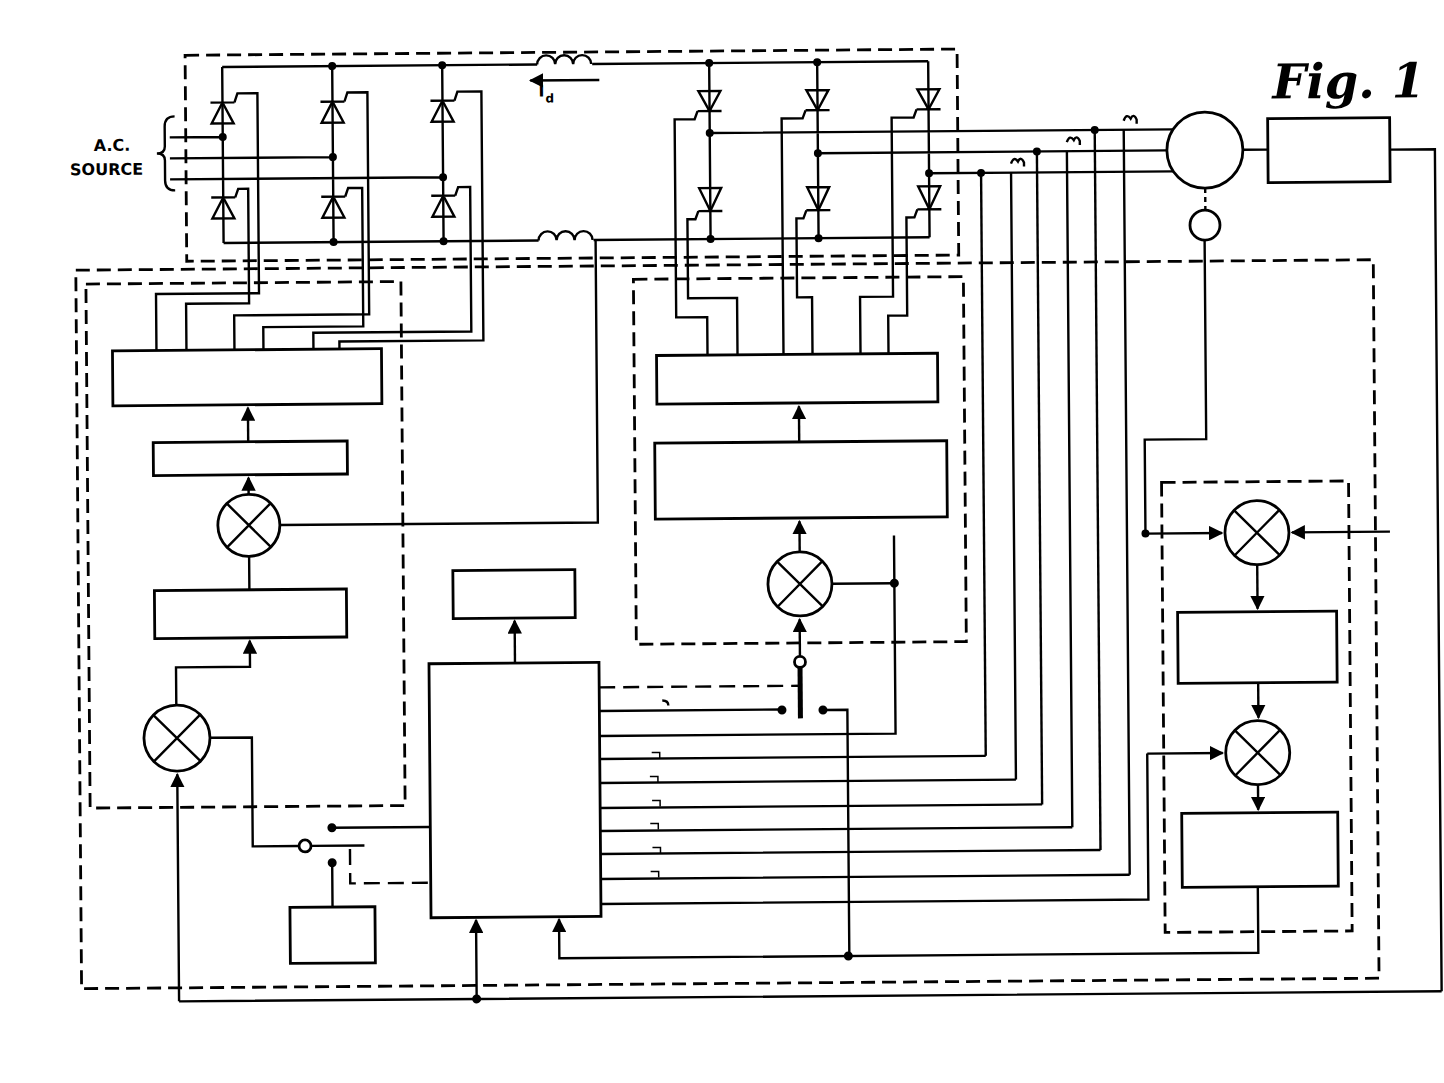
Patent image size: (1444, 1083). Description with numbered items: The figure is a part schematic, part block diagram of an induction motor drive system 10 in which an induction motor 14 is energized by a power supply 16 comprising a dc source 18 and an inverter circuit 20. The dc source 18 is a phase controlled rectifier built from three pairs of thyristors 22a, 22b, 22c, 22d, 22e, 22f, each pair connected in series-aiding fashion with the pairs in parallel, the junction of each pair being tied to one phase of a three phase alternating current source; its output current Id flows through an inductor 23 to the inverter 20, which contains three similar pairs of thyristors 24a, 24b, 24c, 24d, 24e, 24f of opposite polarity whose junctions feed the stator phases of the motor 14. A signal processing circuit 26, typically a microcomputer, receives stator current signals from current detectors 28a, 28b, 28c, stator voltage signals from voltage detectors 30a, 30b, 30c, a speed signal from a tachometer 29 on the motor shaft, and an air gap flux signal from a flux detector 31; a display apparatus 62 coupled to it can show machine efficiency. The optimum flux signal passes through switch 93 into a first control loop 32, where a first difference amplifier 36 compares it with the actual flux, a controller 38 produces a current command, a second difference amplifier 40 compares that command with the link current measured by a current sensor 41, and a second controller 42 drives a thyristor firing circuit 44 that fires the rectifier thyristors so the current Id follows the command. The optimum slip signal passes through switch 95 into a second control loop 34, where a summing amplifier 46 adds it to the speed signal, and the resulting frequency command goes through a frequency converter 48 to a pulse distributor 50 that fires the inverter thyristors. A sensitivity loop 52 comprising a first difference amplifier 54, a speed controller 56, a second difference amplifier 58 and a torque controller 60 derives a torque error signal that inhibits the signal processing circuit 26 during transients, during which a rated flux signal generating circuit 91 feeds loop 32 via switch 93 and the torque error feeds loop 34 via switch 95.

The induction motor drive system 10 is at (114, 79).
The induction motor 14 is at (1235, 184).
The power supply 16 is at (962, 78).
The dc source 18 is at (497, 162).
The inverter circuit 20 is at (662, 162).
The thyristor 22a is at (235, 104).
The thyristor 22b is at (235, 211).
The thyristor 22c is at (324, 100).
The thyristor 22d is at (323, 200).
The thyristor 22e is at (432, 100).
The thyristor 22f is at (428, 200).
The inductor 23 is at (590, 70).
The thyristor 24a is at (695, 98).
The thyristor 24b is at (724, 208).
The thyristor 24c is at (798, 98).
The thyristor 24d is at (832, 208).
The thyristor 24e is at (908, 98).
The thyristor 24f is at (910, 196).
The signal processing circuit 26 is at (470, 662).
The current detector 28a is at (1012, 160).
The current detector 28b is at (1068, 148).
The current detector 28c is at (1125, 132).
The tachometer 29 is at (1194, 238).
The voltage detector 30a is at (985, 170).
The voltage detector 30b is at (1040, 154).
The voltage detector 30c is at (1098, 134).
The flux detector 31 is at (1370, 188).
The first control loop 32 is at (404, 456).
The second control loop 34 is at (917, 644).
The first difference amplifier 36 is at (156, 756).
The controller 38 is at (154, 634).
The second difference amplifier 40 is at (218, 520).
The current sensor 41 is at (573, 226).
The second controller 42 is at (166, 472).
The thyristor firing circuit 44 is at (150, 402).
The summing amplifier 46 is at (766, 584).
The frequency converter 48 is at (710, 522).
The pulse distributor 50 is at (712, 404).
The sensitivity loop 52 is at (1290, 488).
The first difference amplifier 54 is at (1276, 525).
The speed controller 56 is at (1224, 614).
The second difference amplifier 58 is at (1288, 762).
The torque controller 60 is at (1226, 818).
The display apparatus 62 is at (494, 568).
The rated flux signal generating circuit 91 is at (285, 936).
The switch 93 is at (302, 840).
The switch 95 is at (802, 683).